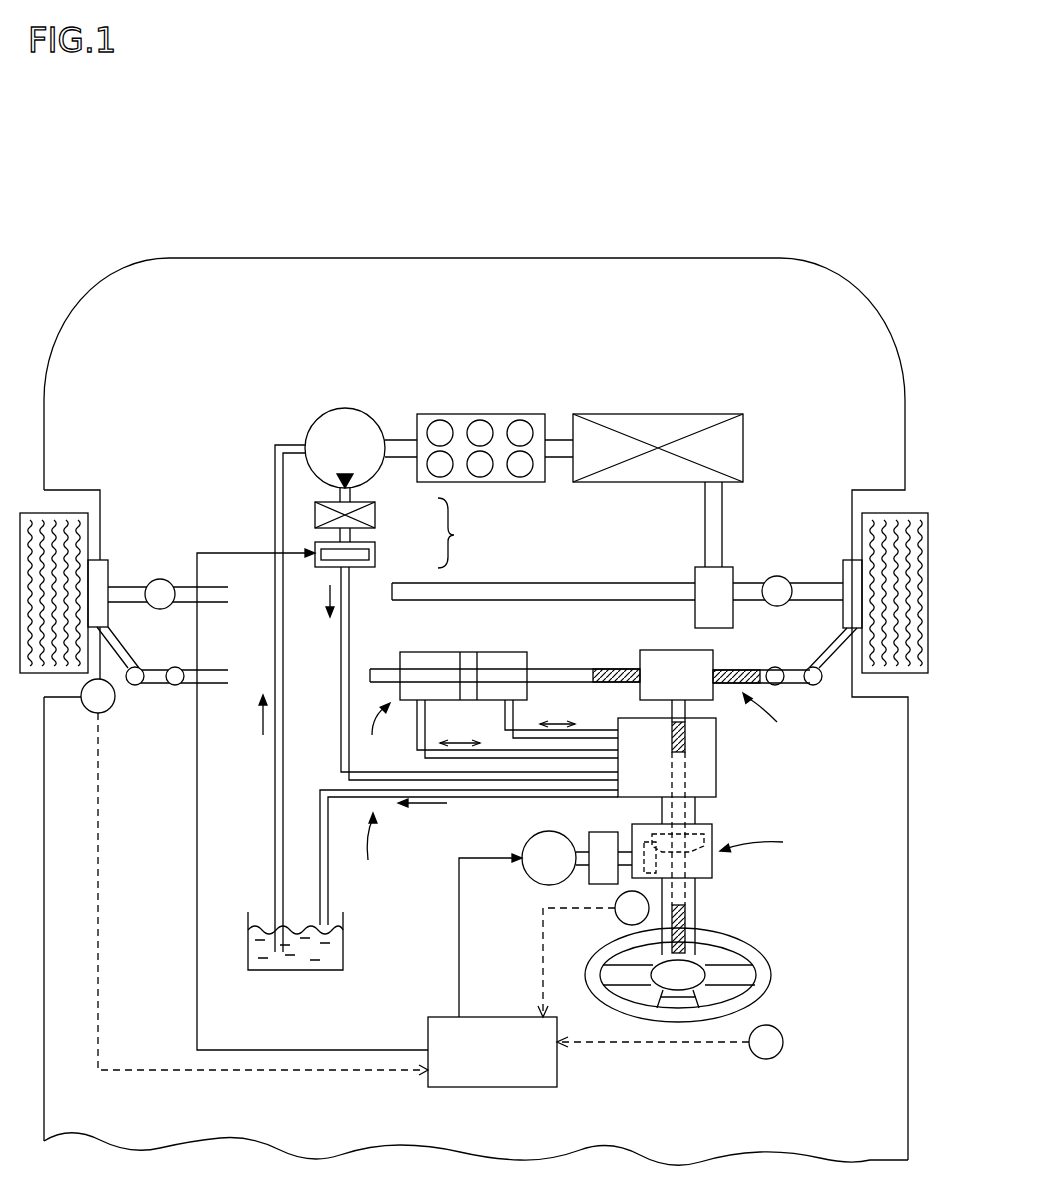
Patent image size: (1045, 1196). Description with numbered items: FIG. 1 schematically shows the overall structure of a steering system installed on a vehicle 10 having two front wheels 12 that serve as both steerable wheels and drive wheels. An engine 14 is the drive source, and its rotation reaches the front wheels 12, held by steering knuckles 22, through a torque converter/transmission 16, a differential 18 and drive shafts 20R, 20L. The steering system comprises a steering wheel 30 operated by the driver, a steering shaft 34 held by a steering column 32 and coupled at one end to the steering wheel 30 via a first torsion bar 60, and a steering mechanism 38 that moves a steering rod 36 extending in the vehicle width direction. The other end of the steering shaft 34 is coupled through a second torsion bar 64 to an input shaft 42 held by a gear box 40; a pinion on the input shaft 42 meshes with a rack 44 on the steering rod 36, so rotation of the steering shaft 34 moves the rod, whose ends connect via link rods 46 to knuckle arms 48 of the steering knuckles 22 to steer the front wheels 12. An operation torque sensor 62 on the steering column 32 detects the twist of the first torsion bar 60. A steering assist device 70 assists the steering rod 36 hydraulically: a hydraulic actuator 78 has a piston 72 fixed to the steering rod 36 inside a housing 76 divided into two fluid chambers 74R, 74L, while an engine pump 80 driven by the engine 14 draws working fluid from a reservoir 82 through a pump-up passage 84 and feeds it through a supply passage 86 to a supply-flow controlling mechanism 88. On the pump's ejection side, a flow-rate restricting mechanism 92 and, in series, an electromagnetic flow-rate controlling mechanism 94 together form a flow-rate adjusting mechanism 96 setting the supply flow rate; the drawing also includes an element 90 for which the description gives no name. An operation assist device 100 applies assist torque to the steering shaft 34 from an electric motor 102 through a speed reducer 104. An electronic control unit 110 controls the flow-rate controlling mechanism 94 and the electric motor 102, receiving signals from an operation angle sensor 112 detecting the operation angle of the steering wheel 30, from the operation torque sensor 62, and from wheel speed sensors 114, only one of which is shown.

The vehicle 10 is at (640, 265).
The front wheel 12 is at (35, 518).
The engine 14 is at (505, 414).
The torque converter/transmission 16 is at (657, 414).
The differential 18 is at (733, 572).
The drive shaft 20L is at (560, 585).
The drive shaft 20R is at (750, 590).
The steering knuckle 22 is at (108, 567).
The steering wheel 30 is at (760, 965).
The steering column 32 is at (695, 902).
The steering shaft 34 is at (697, 892).
The steering rod 36 is at (548, 668).
The steering mechanism 38 is at (774, 715).
The gear box 40 is at (660, 652).
The input shaft 42 is at (688, 708).
The rack 44 is at (725, 668).
The link rod 46 is at (157, 684).
The knuckle arm 48 is at (120, 648).
The first torsion bar 60 is at (688, 915).
The operation torque sensor 62 is at (615, 912).
The second torsion bar 64 is at (688, 742).
The steering assist device 70 is at (377, 850).
The piston 72 is at (468, 652).
The fluid chamber 74L is at (428, 652).
The fluid chamber 74R is at (505, 652).
The housing 76 is at (408, 652).
The hydraulic actuator 78 is at (372, 733).
The engine pump 80 is at (350, 417).
The reservoir 82 is at (340, 958).
The pump-up passage 84 is at (275, 775).
The supply passage 86 is at (340, 680).
The supply-flow controlling mechanism 88 is at (632, 718).
The return passage 90 is at (320, 820).
The flow-rate restricting mechanism 92 is at (375, 514).
The flow-rate controlling mechanism 94 is at (375, 553).
The flow-rate adjusting mechanism 96 is at (462, 533).
The operation assist device 100 is at (729, 851).
The electric motor 102 is at (540, 832).
The speed reducer 104 is at (600, 832).
The electronic control unit 110 is at (530, 1087).
The operation angle sensor 112 is at (768, 1025).
The wheel speed sensor 114 is at (87, 707).